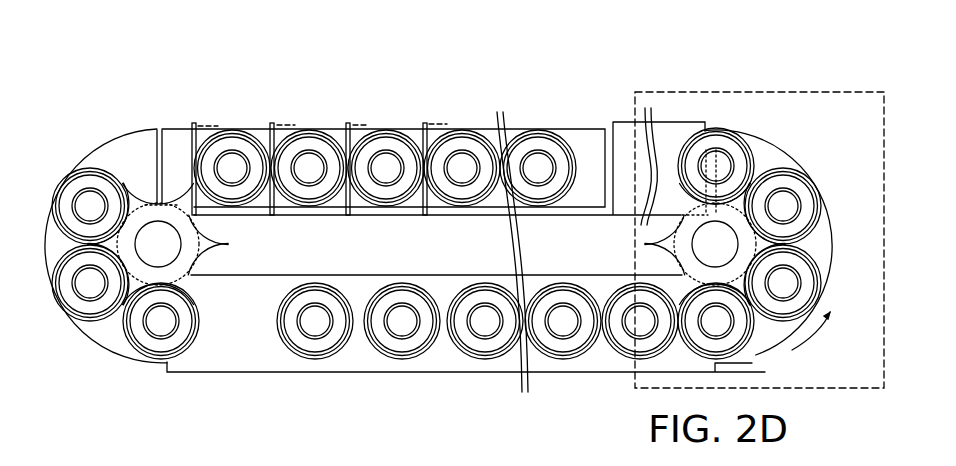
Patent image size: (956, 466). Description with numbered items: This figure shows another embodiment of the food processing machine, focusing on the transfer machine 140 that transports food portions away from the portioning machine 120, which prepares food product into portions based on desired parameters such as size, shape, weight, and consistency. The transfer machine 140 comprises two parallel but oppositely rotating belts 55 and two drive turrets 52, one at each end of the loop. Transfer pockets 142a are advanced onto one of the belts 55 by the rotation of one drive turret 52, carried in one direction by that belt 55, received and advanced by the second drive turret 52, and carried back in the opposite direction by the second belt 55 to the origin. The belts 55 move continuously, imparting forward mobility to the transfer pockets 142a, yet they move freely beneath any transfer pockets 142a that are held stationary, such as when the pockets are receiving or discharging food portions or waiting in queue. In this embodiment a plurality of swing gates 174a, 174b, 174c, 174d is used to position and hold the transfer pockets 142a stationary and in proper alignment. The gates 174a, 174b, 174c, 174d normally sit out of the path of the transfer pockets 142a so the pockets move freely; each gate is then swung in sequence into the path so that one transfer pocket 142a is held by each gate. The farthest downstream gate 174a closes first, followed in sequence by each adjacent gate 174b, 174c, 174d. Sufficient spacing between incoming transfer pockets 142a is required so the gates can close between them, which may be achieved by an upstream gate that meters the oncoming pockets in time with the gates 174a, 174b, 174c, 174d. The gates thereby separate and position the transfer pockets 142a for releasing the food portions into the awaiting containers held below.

The drive turret 52 is at (128, 188).
The belt 55 is at (663, 118).
The portioning machine 120 is at (800, 90).
The transfer machine 140 is at (625, 71).
The transfer pocket 142a is at (830, 258).
The swing gate 174a is at (190, 127).
The swing gate 174b is at (262, 124).
The swing gate 174c is at (341, 124).
The swing gate 174d is at (416, 123).